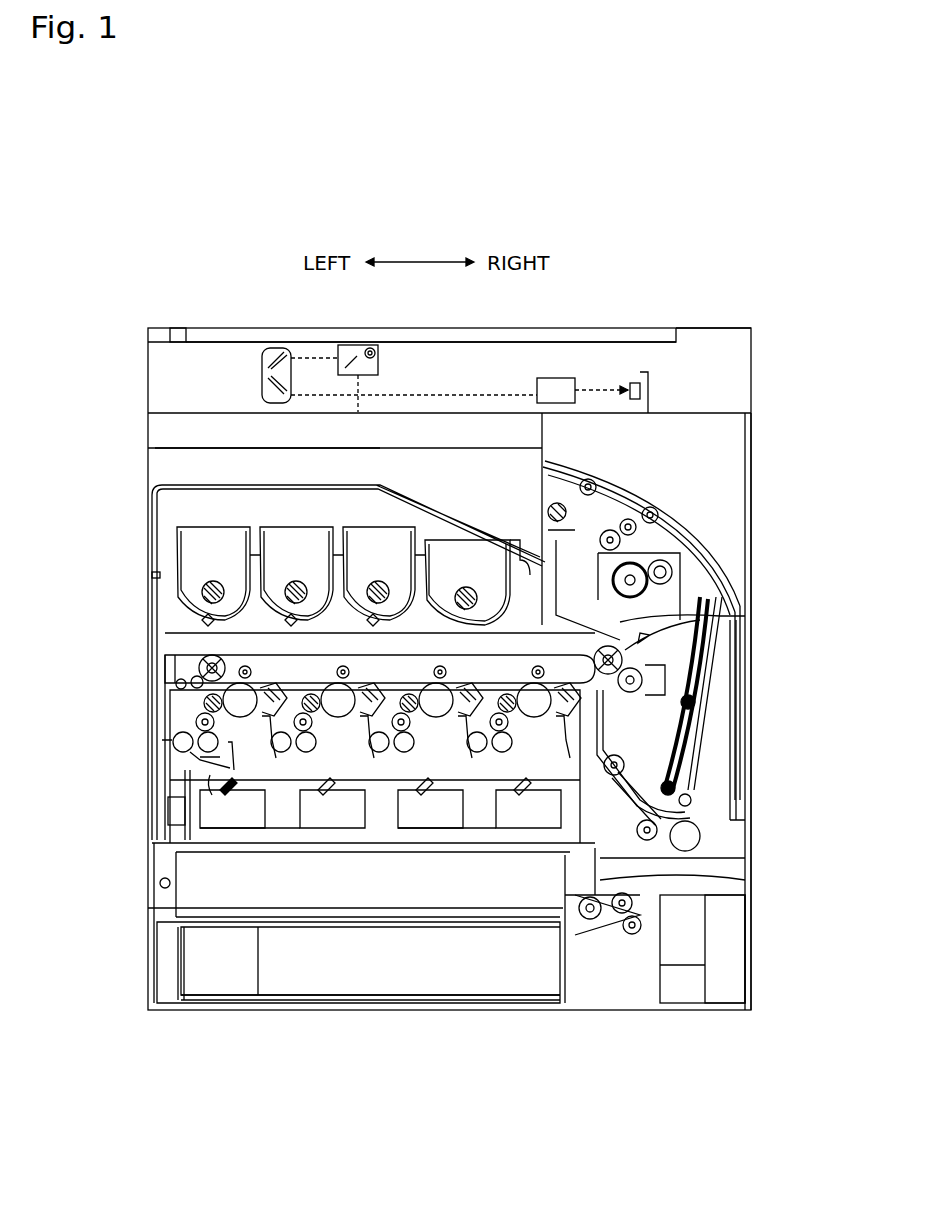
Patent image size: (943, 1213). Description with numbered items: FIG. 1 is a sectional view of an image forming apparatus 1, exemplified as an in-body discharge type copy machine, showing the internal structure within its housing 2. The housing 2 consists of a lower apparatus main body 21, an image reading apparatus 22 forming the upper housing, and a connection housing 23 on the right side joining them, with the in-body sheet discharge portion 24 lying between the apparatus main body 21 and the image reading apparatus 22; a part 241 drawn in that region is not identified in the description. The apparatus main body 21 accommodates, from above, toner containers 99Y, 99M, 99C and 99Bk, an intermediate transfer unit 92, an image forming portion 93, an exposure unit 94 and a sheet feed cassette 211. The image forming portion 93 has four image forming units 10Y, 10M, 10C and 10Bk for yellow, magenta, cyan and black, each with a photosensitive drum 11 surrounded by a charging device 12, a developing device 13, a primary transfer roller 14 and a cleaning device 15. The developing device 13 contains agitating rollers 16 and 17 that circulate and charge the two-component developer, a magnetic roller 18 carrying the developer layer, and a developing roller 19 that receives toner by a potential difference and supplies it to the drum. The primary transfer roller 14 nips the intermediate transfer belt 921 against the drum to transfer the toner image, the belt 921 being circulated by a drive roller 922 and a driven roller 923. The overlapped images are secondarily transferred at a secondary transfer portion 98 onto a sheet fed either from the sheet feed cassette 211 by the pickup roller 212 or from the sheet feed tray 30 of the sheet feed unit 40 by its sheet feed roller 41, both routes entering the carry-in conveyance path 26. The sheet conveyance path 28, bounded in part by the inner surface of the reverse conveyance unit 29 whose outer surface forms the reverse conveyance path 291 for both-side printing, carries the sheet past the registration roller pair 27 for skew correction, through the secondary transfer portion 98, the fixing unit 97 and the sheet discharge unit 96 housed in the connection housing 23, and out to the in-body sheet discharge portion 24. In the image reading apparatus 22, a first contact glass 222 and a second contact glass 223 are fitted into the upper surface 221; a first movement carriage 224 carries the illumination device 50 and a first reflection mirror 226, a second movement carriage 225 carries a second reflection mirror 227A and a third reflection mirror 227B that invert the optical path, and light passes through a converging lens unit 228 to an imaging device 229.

The image forming apparatus 1 is at (680, 281).
The housing 2 is at (150, 556).
The image forming unit 10Y is at (185, 713).
The image forming unit 10M is at (320, 692).
The image forming unit 10C is at (417, 692).
The image forming unit 10Bk is at (516, 692).
The photosensitive drum 11 is at (246, 652).
The charging device 12 is at (278, 742).
The developing device 13 is at (236, 745).
The primary transfer roller 14 is at (212, 656).
The cleaning device 15 is at (246, 665).
The agitating roller 16 is at (220, 788).
The agitating roller 17 is at (197, 752).
The magnetic roller 18 is at (178, 732).
The developing roller 19 is at (203, 700).
The apparatus main body 21 is at (152, 872).
The image reading apparatus 22 is at (752, 378).
The connection housing 23 is at (752, 478).
The in-body sheet discharge portion 24 is at (522, 434).
The carry-in conveyance path 26 is at (662, 880).
The registration roller pair 27 is at (602, 922).
The sheet conveyance path 28 is at (612, 748).
The reverse conveyance unit 29 is at (720, 654).
The sheet feed tray 30 is at (740, 690).
The sheet feed unit 40 is at (736, 858).
The sheet feed roller 41 is at (700, 834).
The illumination device 50 is at (383, 359).
The intermediate transfer unit 92 is at (165, 660).
The image forming portion 93 is at (144, 793).
The exposure unit 94 is at (166, 812).
The sheet discharge unit 96 is at (626, 514).
The fixing unit 97 is at (736, 548).
The secondary transfer portion 98 is at (700, 616).
The toner container 99Y is at (212, 530).
The toner container 99M is at (295, 530).
The toner container 99C is at (358, 528).
The toner container 99Bk is at (437, 525).
The sheet feed cassette 211 is at (163, 978).
The pickup roller 212 is at (590, 920).
The upper surface 221 is at (721, 330).
The first contact glass 222 is at (176, 328).
The second contact glass 223 is at (214, 340).
The first movement carriage 224 is at (385, 362).
The second movement carriage 225 is at (276, 348).
The first reflection mirror 226 is at (361, 376).
The second reflection mirror 227A is at (264, 362).
The third reflection mirror 227B is at (264, 392).
The converging lens unit 228 is at (549, 378).
The imaging device 229 is at (633, 382).
The discharge tray bottom 241 is at (266, 450).
The reverse conveyance path 291 is at (710, 668).
The intermediate transfer belt 921 is at (340, 664).
The drive roller 922 is at (618, 704).
The driven roller 923 is at (175, 682).